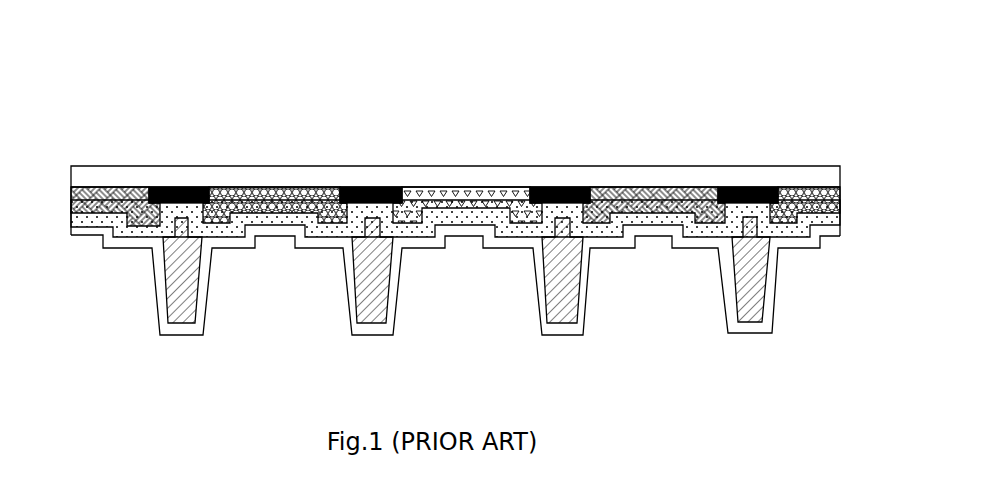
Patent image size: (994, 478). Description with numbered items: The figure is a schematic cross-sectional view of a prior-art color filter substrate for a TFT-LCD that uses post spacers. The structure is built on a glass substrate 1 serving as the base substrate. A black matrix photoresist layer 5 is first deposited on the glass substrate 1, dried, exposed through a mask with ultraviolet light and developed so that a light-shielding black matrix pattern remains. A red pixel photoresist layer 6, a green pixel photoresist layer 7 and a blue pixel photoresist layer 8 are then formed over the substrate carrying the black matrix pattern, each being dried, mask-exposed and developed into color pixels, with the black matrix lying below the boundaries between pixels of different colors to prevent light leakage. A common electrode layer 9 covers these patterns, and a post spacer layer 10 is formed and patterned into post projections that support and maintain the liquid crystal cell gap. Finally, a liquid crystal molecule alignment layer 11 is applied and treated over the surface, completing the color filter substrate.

The glass substrate 1 is at (95, 180).
The black matrix photoresist layer 5 is at (180, 187).
The red pixel photoresist layer 6 is at (270, 200).
The green pixel photoresist layer 7 is at (474, 195).
The blue pixel photoresist layer 8 is at (123, 205).
The common electrode layer 9 is at (95, 220).
The post spacer layer 10 is at (187, 275).
The liquid crystal molecule alignment layer 11 is at (103, 242).